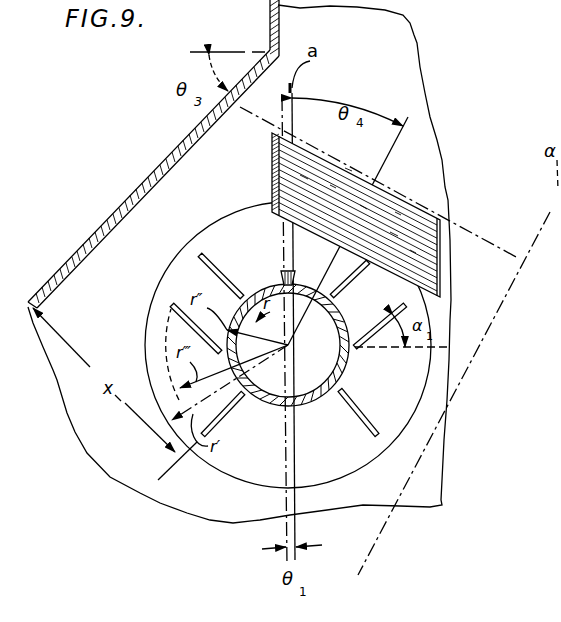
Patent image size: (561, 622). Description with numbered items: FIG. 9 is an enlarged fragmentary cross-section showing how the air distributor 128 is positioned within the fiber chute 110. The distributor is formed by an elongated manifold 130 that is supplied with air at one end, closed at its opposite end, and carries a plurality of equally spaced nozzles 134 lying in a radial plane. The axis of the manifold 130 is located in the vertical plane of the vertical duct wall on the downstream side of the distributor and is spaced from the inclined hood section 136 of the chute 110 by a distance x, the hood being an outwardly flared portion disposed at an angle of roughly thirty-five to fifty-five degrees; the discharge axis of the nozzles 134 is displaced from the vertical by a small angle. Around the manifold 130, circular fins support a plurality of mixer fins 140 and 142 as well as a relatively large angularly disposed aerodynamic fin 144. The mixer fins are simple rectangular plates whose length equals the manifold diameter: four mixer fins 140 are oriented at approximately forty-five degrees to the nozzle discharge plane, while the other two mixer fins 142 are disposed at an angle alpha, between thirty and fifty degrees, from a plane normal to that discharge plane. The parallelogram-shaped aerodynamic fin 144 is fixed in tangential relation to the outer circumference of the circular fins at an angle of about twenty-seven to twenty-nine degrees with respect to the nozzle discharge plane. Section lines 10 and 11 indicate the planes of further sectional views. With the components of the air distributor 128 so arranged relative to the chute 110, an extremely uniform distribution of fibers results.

The fiber chute 110 is at (276, 31).
The air distributor 128 is at (440, 199).
The manifold 130 is at (302, 409).
The nozzles 134 is at (281, 278).
The hood section 136 is at (109, 216).
The mixer fins 140 is at (371, 421).
The mixer fins 142 is at (176, 304).
The aerodynamic fin 144 is at (393, 207).
The section line 10- 10 is at (258, 90).
The section line 11- 11 is at (557, 253).